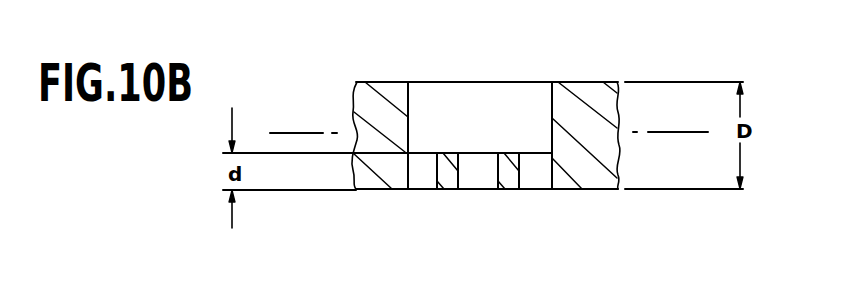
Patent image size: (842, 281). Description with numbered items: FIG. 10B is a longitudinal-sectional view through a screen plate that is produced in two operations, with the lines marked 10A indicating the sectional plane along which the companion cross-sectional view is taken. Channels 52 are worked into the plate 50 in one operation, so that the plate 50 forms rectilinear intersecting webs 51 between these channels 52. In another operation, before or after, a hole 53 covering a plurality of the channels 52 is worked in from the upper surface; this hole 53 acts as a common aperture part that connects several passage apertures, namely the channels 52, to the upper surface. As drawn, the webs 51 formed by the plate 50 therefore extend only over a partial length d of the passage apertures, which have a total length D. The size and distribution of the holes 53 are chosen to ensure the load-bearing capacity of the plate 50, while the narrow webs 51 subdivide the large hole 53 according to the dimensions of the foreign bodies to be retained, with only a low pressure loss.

The sectional plane line 10A is at (291, 133).
The plate 50 is at (582, 190).
The webs 51 is at (447, 190).
The channels 52 is at (477, 190).
The hole 53 is at (485, 98).